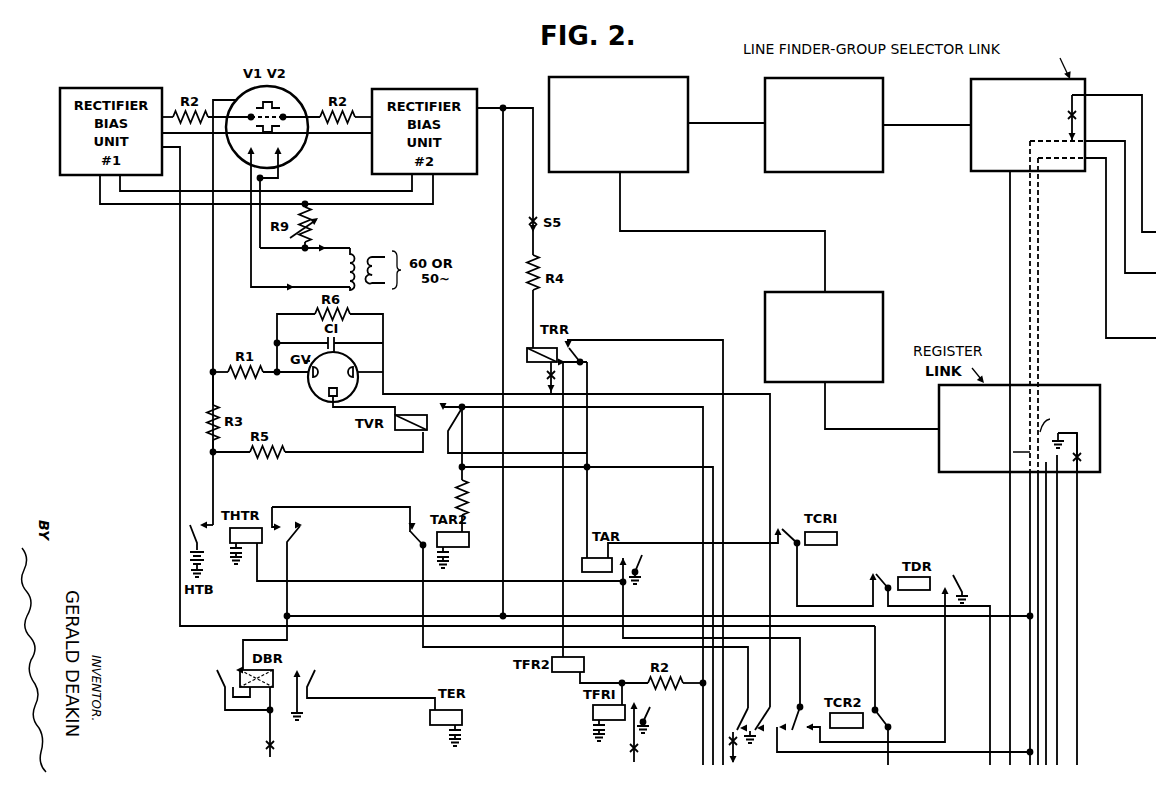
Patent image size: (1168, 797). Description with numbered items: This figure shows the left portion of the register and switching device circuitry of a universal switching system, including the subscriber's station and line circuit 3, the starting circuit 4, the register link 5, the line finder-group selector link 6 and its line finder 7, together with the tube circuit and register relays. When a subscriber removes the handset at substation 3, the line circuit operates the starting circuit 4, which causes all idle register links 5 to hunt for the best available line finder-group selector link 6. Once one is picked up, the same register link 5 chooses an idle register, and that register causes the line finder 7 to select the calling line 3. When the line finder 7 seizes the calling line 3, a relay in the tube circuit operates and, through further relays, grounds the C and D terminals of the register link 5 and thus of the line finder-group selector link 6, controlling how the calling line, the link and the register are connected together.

The substation 3 is at (683, 80).
The starting circuit 4 is at (880, 300).
The register link 5 is at (1095, 395).
The line finder-group selector link 6 is at (1082, 82).
The line finder 7 is at (880, 82).